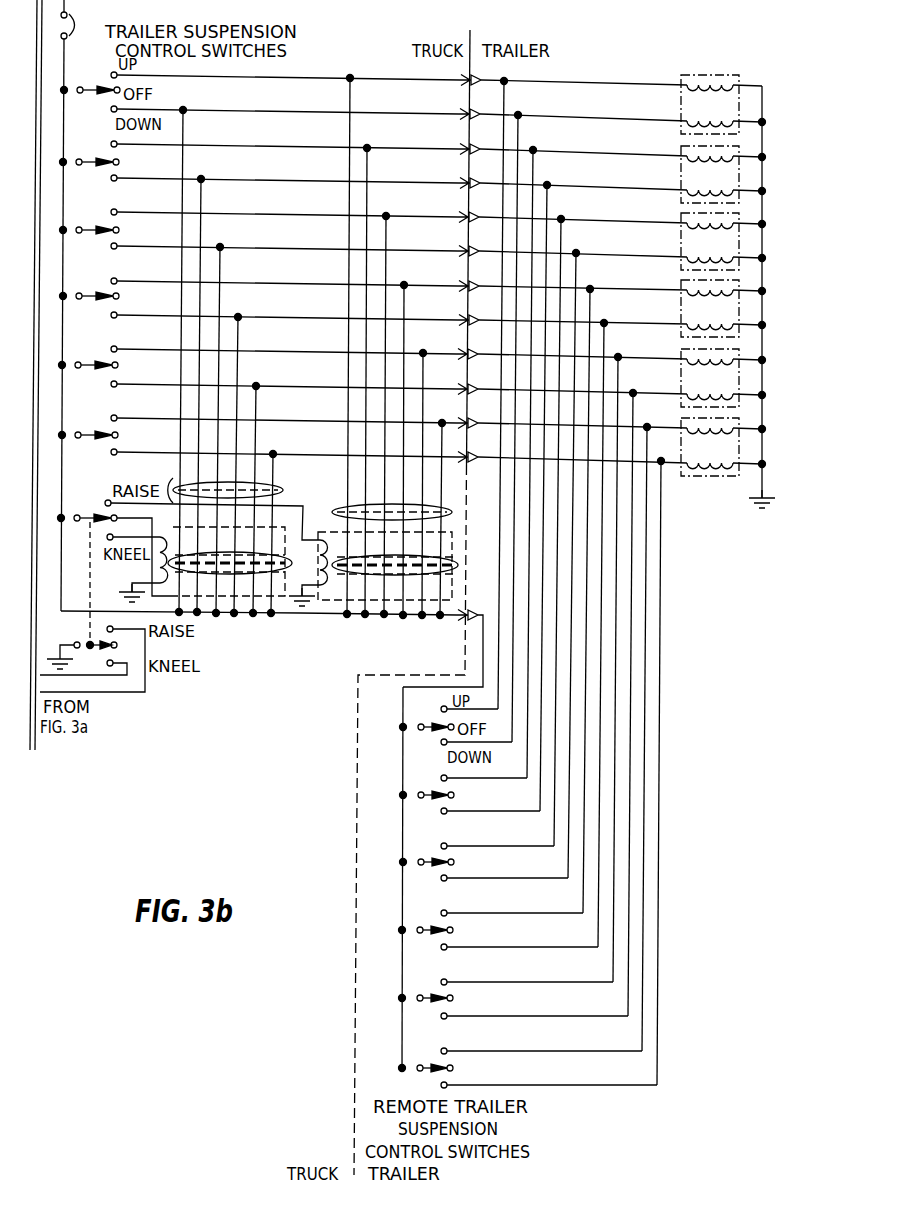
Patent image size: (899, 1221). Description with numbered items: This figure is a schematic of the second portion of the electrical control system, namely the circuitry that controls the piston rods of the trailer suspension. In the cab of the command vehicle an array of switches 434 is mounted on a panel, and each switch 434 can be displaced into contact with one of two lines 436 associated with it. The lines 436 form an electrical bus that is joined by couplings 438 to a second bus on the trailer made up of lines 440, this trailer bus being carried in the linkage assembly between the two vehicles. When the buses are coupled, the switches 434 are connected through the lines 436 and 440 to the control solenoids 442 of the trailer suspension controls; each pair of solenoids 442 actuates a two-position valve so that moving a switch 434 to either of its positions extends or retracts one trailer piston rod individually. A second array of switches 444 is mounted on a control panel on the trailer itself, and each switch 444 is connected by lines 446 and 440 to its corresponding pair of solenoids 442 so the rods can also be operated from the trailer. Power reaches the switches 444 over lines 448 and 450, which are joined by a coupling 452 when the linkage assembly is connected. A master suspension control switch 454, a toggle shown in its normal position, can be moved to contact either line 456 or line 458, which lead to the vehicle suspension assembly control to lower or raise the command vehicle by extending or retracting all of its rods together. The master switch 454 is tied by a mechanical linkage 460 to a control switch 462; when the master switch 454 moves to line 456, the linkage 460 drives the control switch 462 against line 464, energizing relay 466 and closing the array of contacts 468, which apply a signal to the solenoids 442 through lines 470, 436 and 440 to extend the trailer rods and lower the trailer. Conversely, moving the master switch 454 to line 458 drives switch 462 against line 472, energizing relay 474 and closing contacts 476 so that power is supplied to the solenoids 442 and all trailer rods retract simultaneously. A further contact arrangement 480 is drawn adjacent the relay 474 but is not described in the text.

The switches 434 is at (112, 425).
The lines 436 is at (306, 182).
The couplings 438 is at (456, 184).
The lines 440 is at (628, 222).
The control solenoids 442 is at (742, 420).
The switches 444 is at (435, 781).
The lines 446 is at (472, 840).
The line 448 is at (406, 617).
The line 450 is at (468, 610).
The coupling 452 is at (458, 623).
The master suspension control switch 454 is at (85, 633).
The line 456 is at (130, 668).
The line 458 is at (132, 693).
The mechanical linkage 460 is at (110, 585).
The control switch 462 is at (98, 498).
The line 464 is at (116, 552).
The electrical relay 466 is at (243, 606).
The contacts 468 is at (236, 586).
The lines 470 is at (283, 490).
The line 472 is at (215, 497).
The relay 474 is at (331, 611).
The electrical contacts 476 is at (402, 576).
The raise relay auxiliary contact 480 is at (336, 512).